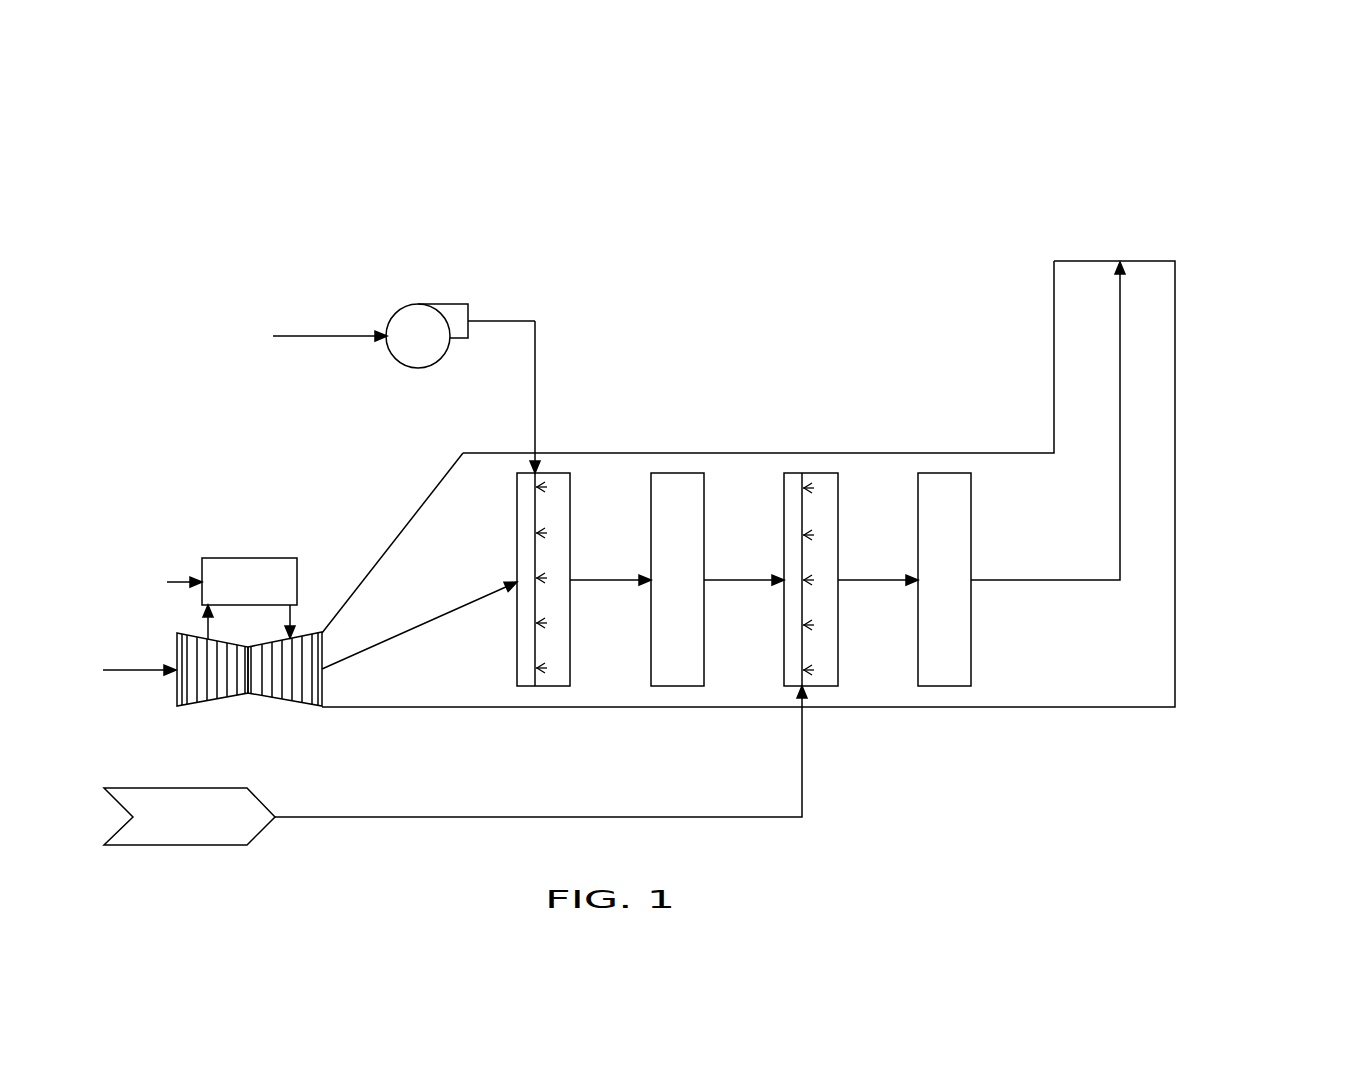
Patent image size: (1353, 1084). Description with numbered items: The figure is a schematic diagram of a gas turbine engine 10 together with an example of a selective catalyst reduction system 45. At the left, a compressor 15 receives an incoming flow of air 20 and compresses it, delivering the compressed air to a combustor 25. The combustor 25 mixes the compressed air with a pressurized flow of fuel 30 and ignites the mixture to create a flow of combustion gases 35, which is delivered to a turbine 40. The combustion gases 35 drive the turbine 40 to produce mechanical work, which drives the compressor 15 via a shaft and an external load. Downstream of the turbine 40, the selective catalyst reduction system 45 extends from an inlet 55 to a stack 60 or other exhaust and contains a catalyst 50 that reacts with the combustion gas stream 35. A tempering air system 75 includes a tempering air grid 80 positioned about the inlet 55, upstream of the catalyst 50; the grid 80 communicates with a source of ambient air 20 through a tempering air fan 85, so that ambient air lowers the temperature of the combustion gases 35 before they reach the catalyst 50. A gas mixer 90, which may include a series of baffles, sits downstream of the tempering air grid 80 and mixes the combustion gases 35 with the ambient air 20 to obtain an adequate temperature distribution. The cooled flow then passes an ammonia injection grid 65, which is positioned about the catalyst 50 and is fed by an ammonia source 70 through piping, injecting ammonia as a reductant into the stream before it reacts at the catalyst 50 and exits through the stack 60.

The gas turbine engine 10 is at (1247, 131).
The compressor 15 is at (184, 684).
The flow of air 20 is at (229, 489).
The combustor 25 is at (249, 565).
The flow of fuel 30 is at (154, 568).
The flow of combustion gases 35 is at (360, 625).
The turbine 40 is at (311, 684).
The selective catalyst reduction system 45 is at (758, 357).
The catalyst 50 is at (1021, 474).
The inlet 55 is at (392, 543).
The stack 60 is at (781, 484).
The ammonia injection grid 65 is at (851, 579).
The ammonia source 70 is at (455, 781).
The tempering air system 75 is at (549, 322).
The tempering air grid 80 is at (584, 579).
The tempering air fan 85 is at (452, 319).
The gas mixer 90 is at (717, 579).